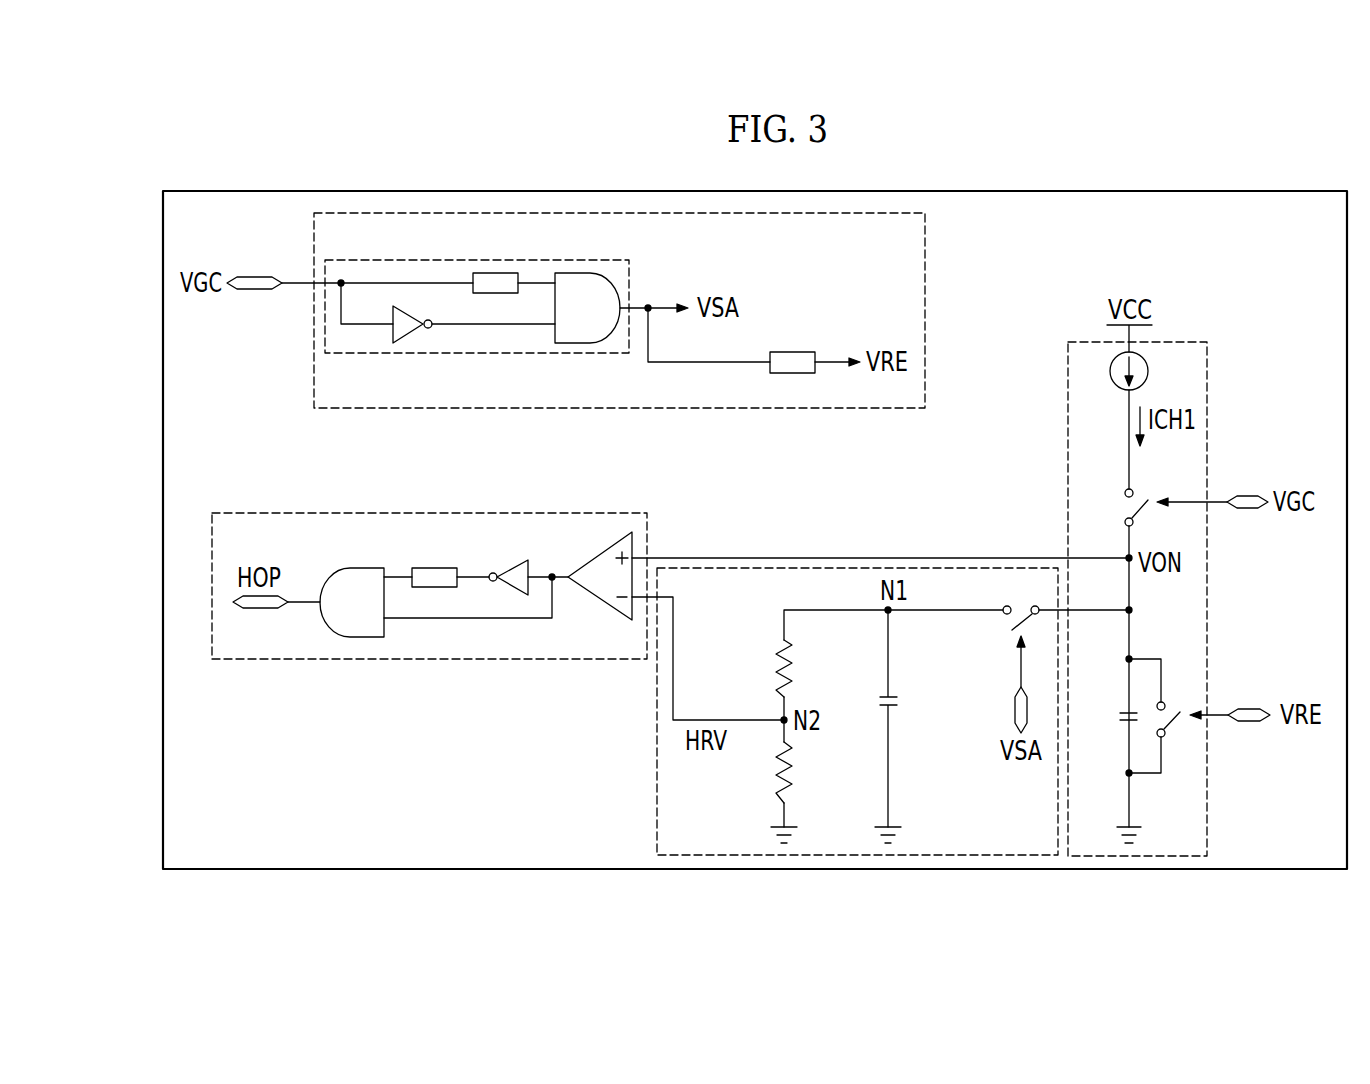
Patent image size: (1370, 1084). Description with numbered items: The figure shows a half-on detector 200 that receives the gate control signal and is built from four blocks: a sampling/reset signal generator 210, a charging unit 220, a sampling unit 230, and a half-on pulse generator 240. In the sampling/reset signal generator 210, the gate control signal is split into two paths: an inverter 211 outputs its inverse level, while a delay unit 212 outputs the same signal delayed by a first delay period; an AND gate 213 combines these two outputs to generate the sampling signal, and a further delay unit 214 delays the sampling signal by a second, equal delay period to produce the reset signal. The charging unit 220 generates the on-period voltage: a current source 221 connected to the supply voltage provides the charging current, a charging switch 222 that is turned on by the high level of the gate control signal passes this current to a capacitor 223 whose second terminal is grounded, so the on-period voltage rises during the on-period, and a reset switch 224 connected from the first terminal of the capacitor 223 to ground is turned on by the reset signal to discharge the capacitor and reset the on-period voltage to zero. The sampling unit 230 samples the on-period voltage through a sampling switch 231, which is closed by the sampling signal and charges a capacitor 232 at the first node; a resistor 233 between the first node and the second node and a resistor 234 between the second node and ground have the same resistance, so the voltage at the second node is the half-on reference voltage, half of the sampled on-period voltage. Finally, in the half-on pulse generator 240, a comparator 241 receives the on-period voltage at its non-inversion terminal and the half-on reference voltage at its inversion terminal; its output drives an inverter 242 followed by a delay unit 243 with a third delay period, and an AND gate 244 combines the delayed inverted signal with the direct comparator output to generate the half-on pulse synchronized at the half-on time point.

The half-on detector 200 is at (1125, 191).
The sampling/reset signal generator 210 is at (925, 240).
The inverter 211 is at (410, 343).
The delay unit 212 is at (495, 273).
The AND gate 213 is at (571, 343).
The delay unit 214 is at (795, 352).
The charging unit 220 is at (1207, 602).
The current source 221 is at (1110, 378).
The charging switch 222 is at (1100, 498).
The capacitor 223 is at (1110, 701).
The reset switch 224 is at (1190, 738).
The sampling unit 230 is at (657, 795).
The sampling switch 231 is at (996, 633).
The capacitor 232 is at (868, 718).
The resistor 233 is at (761, 668).
The resistor 234 is at (761, 772).
The half-on pulse generator 240 is at (276, 513).
The comparator 241 is at (597, 598).
The inverter 242 is at (513, 563).
The delay unit 243 is at (439, 568).
The AND gate 244 is at (357, 568).